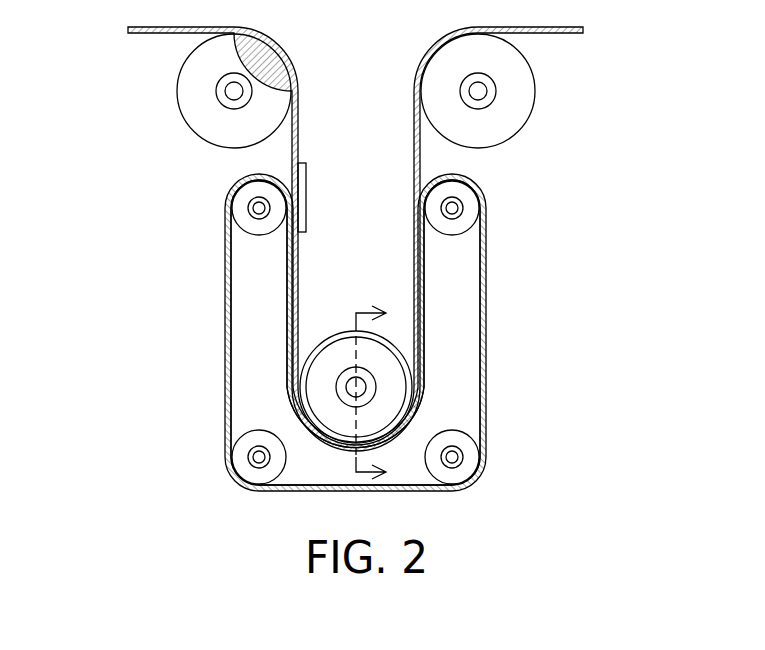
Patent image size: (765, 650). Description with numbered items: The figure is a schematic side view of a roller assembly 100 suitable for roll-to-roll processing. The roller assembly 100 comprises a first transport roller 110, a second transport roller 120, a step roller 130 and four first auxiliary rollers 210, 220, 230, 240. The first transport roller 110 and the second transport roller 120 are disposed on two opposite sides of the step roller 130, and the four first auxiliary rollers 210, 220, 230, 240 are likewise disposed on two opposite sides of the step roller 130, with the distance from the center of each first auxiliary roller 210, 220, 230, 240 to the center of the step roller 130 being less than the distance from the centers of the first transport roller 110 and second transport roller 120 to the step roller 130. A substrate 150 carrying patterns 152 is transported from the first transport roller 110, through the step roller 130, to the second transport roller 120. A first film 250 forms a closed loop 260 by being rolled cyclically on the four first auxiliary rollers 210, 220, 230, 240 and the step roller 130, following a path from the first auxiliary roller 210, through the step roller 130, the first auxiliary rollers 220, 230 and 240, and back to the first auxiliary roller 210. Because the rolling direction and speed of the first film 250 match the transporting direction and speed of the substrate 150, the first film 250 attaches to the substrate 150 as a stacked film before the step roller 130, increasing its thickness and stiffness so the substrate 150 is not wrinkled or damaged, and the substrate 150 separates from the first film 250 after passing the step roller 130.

The roller assembly 100 is at (705, 501).
The first transport roller 110 is at (192, 88).
The second transport roller 120 is at (517, 87).
The step roller 130 is at (392, 385).
The substrate 150 is at (167, 27).
The patterns 152 is at (300, 203).
The first auxiliary roller 210 is at (238, 207).
The first auxiliary roller 220 is at (472, 207).
The first auxiliary roller 230 is at (457, 473).
The first auxiliary roller 240 is at (242, 453).
The first film 250 is at (227, 327).
The closed loop 260 is at (253, 375).